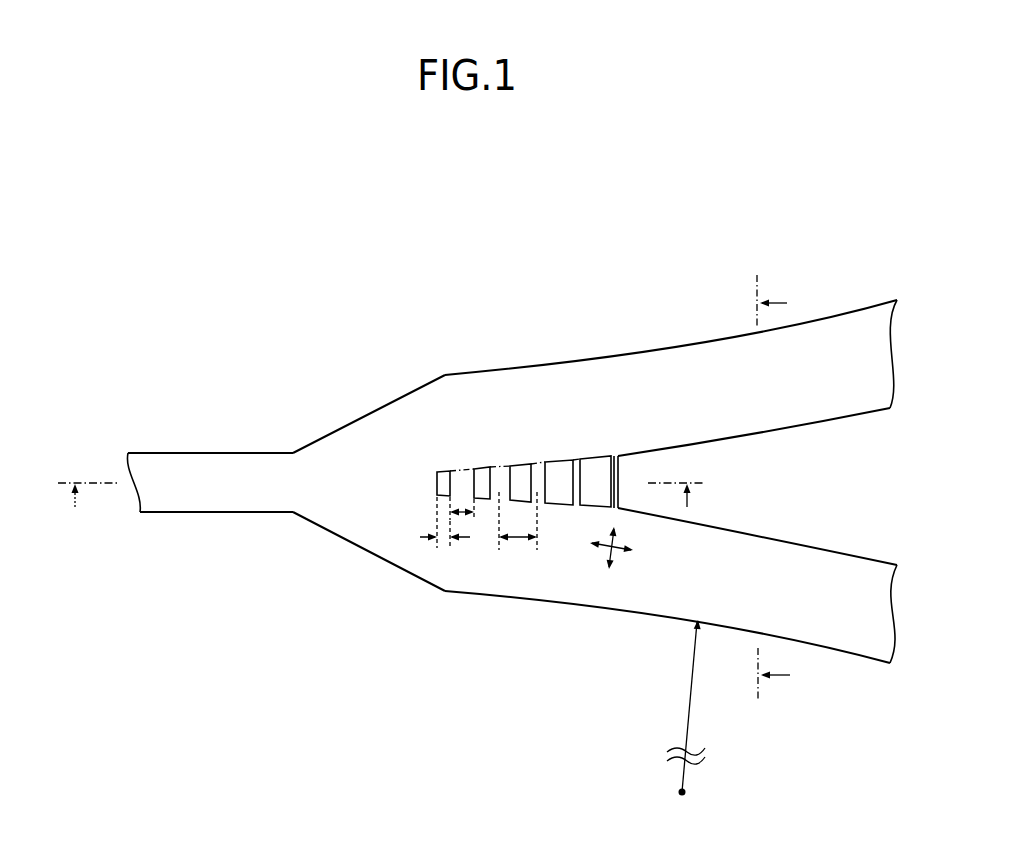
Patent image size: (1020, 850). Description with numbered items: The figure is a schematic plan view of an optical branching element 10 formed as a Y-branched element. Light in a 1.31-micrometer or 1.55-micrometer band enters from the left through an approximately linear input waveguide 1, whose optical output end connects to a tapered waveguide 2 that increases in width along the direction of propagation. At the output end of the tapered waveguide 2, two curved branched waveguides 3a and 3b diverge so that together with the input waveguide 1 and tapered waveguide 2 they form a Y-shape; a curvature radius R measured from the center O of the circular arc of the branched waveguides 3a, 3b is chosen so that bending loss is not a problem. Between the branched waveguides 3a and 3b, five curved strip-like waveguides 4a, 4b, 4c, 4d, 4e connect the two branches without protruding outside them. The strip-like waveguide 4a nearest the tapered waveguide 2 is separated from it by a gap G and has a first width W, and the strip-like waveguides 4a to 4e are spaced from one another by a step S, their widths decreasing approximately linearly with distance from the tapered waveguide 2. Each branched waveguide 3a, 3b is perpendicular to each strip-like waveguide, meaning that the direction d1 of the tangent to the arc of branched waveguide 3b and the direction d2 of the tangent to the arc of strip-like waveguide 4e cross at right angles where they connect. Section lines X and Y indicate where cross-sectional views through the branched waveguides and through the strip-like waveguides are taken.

The input waveguide 1 is at (215, 453).
The tapered waveguide 2 is at (372, 412).
The branched waveguide 3a is at (684, 350).
The branched waveguide 3b is at (582, 604).
The strip-like waveguide 4a is at (479, 488).
The strip-like waveguide 4b is at (513, 487).
The strip-like waveguide 4c is at (548, 488).
The strip-like waveguide 4d is at (585, 486).
The strip-like waveguide 4e is at (622, 484).
The optical branching element 10 is at (708, 217).
The first width W is at (460, 508).
The gap G is at (444, 548).
The step S is at (519, 545).
The direction of tangential line of branched waveguide d1 is at (606, 549).
The direction of tangential line of strip-like waveguide d2 is at (620, 553).
The curvature radius R is at (686, 722).
The center of circular arc O is at (682, 807).
The X-X section line X is at (770, 489).
The Y-Y section line Y is at (381, 489).